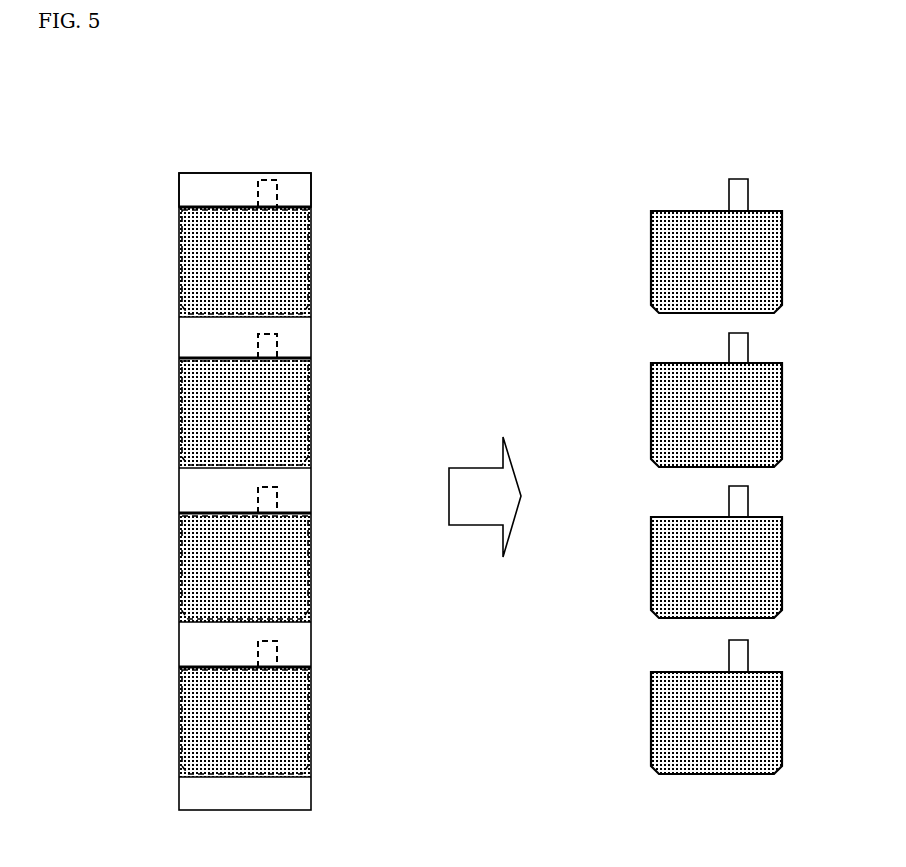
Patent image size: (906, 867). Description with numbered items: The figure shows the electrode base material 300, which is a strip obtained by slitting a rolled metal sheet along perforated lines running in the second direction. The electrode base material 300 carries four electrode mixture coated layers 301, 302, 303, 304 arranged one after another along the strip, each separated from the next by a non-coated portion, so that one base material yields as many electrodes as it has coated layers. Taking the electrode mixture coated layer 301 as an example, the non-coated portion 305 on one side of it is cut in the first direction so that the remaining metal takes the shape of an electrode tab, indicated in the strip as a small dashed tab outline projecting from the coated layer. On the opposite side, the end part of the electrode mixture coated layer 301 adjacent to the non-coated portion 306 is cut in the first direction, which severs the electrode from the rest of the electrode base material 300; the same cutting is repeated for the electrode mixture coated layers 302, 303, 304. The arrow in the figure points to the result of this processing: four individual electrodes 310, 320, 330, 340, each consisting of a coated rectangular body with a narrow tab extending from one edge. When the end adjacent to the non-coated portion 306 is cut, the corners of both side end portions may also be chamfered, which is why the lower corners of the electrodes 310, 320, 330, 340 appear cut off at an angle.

The electrode base material 300 is at (148, 241).
The electrode mixture coated layer 301 is at (197, 286).
The electrode mixture coated layer 302 is at (197, 438).
The electrode mixture coated layer 303 is at (197, 592).
The electrode mixture coated layer 304 is at (197, 745).
The non-coated portion of one side 305 is at (221, 185).
The non-coated portion of the other side 306 is at (293, 337).
The first electrode plate 310 is at (651, 254).
The second electrode plate 320 is at (650, 420).
The third electrode plate 330 is at (650, 582).
The fourth electrode plate 340 is at (651, 745).